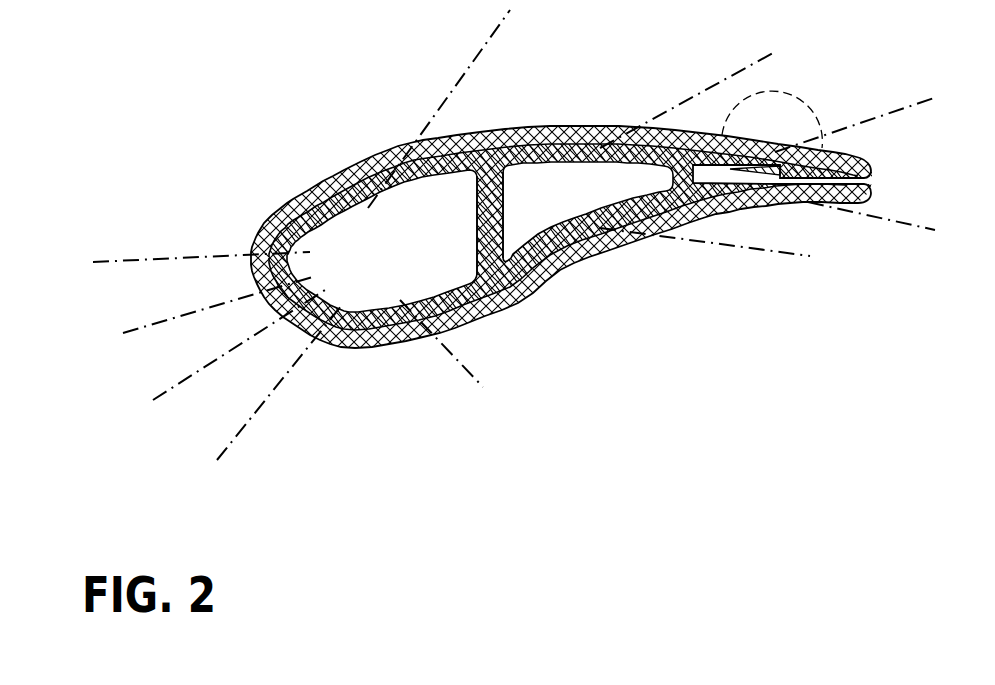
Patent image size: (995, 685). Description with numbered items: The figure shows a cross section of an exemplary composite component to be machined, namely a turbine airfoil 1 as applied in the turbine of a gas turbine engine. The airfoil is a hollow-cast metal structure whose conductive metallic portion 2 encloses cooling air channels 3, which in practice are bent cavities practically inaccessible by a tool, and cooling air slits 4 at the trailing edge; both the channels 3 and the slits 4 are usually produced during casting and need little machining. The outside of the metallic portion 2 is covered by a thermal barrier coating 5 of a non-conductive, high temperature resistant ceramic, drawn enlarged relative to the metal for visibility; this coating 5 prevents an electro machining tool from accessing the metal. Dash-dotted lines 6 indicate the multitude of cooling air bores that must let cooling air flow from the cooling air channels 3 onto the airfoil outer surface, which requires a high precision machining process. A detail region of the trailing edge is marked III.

The turbine airfoil 1 is at (599, 214).
The metallic portion 2 is at (490, 290).
The cooling air channels 3 is at (390, 263).
The cooling air slits 4 is at (853, 180).
The thermal barrier coating 5 is at (518, 138).
The cooling air bores 6 is at (745, 70).
The detail III is at (798, 103).